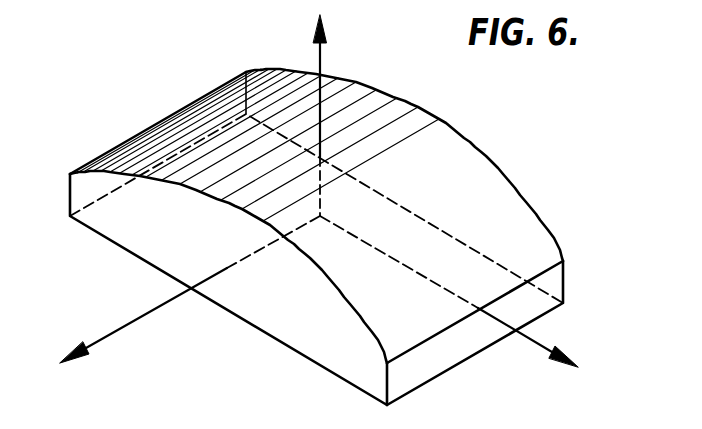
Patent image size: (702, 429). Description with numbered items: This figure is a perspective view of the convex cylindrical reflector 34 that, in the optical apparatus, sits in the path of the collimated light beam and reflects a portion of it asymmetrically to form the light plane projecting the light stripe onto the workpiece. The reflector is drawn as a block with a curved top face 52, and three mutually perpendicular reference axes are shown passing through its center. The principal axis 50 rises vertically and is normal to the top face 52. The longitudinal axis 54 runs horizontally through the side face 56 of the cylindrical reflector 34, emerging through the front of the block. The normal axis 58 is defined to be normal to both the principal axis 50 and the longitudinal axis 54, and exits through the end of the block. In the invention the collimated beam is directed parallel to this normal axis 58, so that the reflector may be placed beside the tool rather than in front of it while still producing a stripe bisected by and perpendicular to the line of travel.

The cylindrical reflector 34 is at (547, 227).
The principal axis 50 is at (322, 50).
The top face 52 is at (417, 133).
The longitudinal axis 54 is at (155, 311).
The side face 56 is at (117, 222).
The normal axis 58 is at (513, 331).